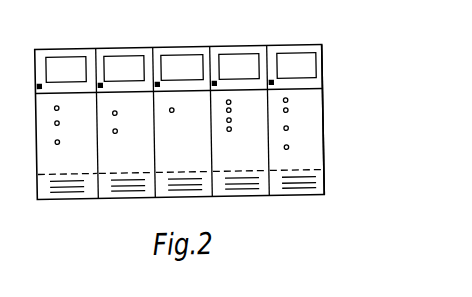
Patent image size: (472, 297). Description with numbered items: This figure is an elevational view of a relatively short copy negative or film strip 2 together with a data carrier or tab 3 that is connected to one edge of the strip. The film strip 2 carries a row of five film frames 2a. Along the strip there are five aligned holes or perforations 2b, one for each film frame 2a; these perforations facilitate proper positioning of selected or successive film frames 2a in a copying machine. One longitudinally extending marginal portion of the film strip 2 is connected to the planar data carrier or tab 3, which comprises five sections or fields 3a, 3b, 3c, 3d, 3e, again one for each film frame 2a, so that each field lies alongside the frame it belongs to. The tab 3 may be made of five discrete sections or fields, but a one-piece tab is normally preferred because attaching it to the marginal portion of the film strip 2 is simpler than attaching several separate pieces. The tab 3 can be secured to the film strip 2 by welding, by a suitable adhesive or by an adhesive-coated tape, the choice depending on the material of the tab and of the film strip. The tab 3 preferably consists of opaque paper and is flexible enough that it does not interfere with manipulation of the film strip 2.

The film strip 2 is at (315, 46).
The film frame 2a is at (184, 62).
The perforation 2b is at (96, 84).
The data carrier or tab 3 is at (328, 121).
The tab section or field 3a is at (66, 197).
The tab section or field 3b is at (115, 126).
The tab section or field 3c is at (193, 122).
The tab section or field 3d is at (239, 200).
The tab section or field 3e is at (318, 157).